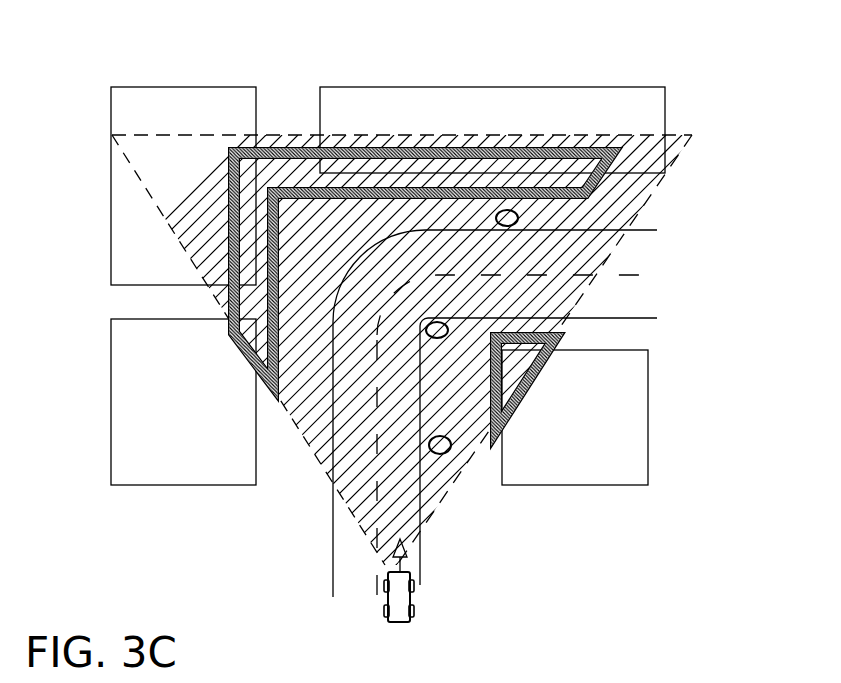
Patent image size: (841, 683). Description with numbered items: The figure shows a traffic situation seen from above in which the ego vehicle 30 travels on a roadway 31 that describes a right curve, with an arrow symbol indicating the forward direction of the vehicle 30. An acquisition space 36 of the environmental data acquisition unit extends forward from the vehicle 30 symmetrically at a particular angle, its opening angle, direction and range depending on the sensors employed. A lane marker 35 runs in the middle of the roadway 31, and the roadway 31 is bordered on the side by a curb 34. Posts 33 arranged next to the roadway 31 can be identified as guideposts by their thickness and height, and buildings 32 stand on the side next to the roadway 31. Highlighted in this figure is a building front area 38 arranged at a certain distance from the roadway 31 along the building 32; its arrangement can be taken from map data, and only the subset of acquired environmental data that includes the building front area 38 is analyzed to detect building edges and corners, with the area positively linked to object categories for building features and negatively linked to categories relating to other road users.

The ego vehicle 30 is at (405, 597).
The roadway 31 is at (407, 512).
The buildings 32 is at (128, 87).
The posts 33 is at (437, 330).
The curb 34 is at (613, 318).
The lane marker 35 is at (613, 275).
The acquisition space 36 is at (308, 437).
The building front area 38 is at (596, 153).